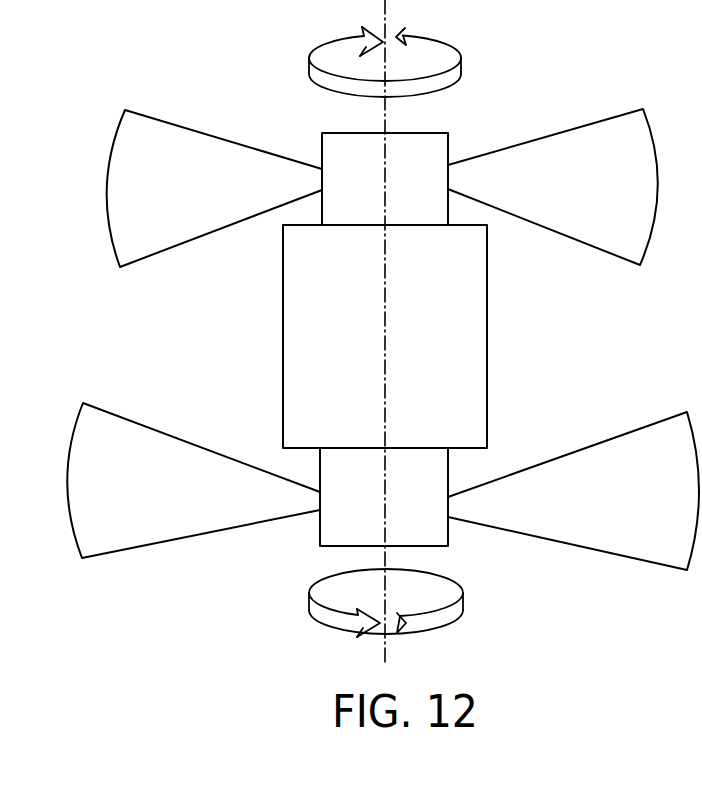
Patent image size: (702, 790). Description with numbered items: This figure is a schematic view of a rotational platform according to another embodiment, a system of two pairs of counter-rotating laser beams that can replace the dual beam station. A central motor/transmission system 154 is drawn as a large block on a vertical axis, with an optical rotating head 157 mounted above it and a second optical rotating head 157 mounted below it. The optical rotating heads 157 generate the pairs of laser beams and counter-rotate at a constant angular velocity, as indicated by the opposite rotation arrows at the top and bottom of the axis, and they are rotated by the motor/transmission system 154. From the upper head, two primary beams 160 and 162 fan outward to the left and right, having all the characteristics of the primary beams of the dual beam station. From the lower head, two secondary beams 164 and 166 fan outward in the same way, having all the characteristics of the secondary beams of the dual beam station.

The motor/transmission system 154 is at (472, 362).
The optical rotating heads 157 is at (435, 135).
The primary beam 160 is at (153, 130).
The primary beam 162 is at (588, 140).
The secondary beam 164 is at (125, 530).
The secondary beam 166 is at (640, 543).